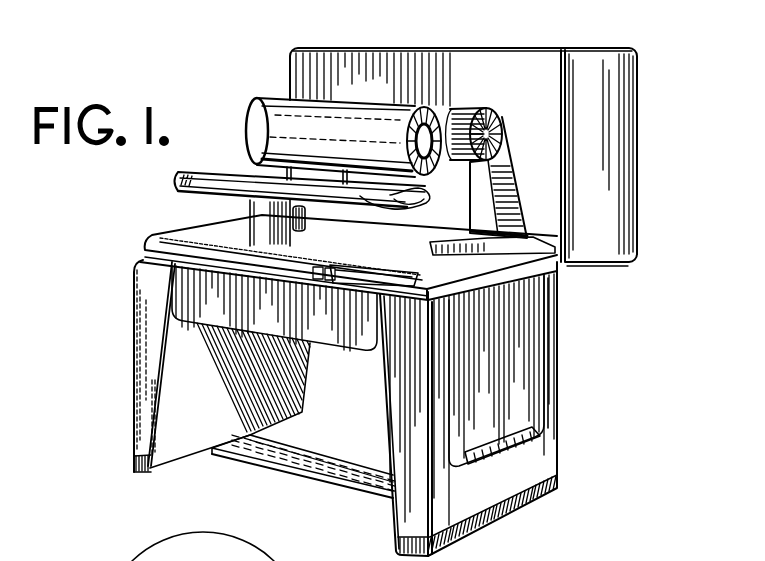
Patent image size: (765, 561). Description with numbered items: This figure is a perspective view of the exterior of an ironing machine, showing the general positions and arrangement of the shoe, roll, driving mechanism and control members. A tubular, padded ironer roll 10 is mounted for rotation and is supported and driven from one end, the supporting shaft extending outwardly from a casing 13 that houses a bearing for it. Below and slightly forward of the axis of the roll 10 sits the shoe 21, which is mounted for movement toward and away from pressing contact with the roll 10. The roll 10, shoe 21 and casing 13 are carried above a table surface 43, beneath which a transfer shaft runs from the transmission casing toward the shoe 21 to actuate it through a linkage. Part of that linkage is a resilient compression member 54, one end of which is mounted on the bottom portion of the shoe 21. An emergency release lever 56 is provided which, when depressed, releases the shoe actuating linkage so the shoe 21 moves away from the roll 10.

The ironer roll 10 is at (262, 114).
The casing 13 is at (492, 124).
The shoe 21 is at (182, 184).
The table surface 43 is at (408, 250).
The resilient compression member 54 is at (307, 227).
The emergency release lever 56 is at (160, 245).